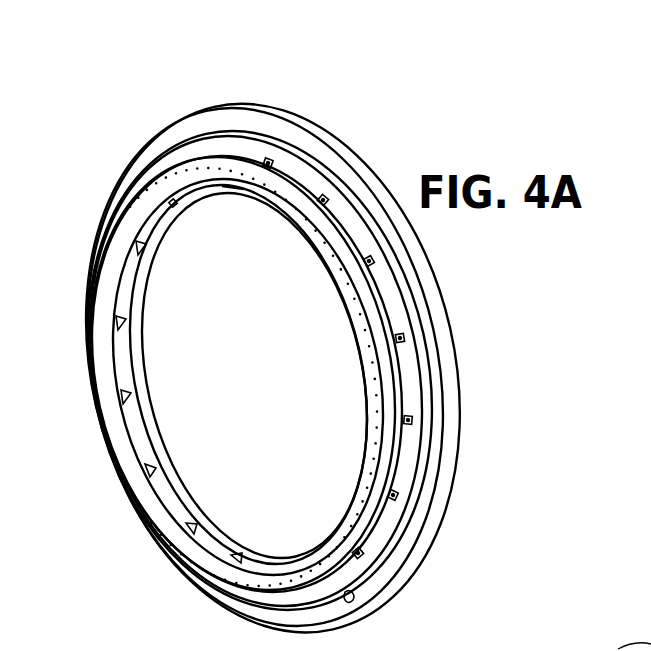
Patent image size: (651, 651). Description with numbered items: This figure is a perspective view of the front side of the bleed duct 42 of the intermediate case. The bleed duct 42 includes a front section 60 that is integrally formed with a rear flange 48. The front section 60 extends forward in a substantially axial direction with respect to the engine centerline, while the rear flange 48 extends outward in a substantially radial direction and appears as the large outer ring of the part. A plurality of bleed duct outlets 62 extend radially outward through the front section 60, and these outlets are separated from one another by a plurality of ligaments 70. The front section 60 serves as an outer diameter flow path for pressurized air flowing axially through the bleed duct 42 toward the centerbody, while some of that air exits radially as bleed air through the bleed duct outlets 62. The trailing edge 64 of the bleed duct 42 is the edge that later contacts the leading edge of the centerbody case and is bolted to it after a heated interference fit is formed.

The bleed duct 42 is at (118, 92).
The rear flange 48 is at (215, 108).
The front section 60 is at (88, 372).
The bleed duct outlets 62 is at (127, 287).
The trailing edge 64 is at (137, 325).
The ligaments 70 is at (123, 403).